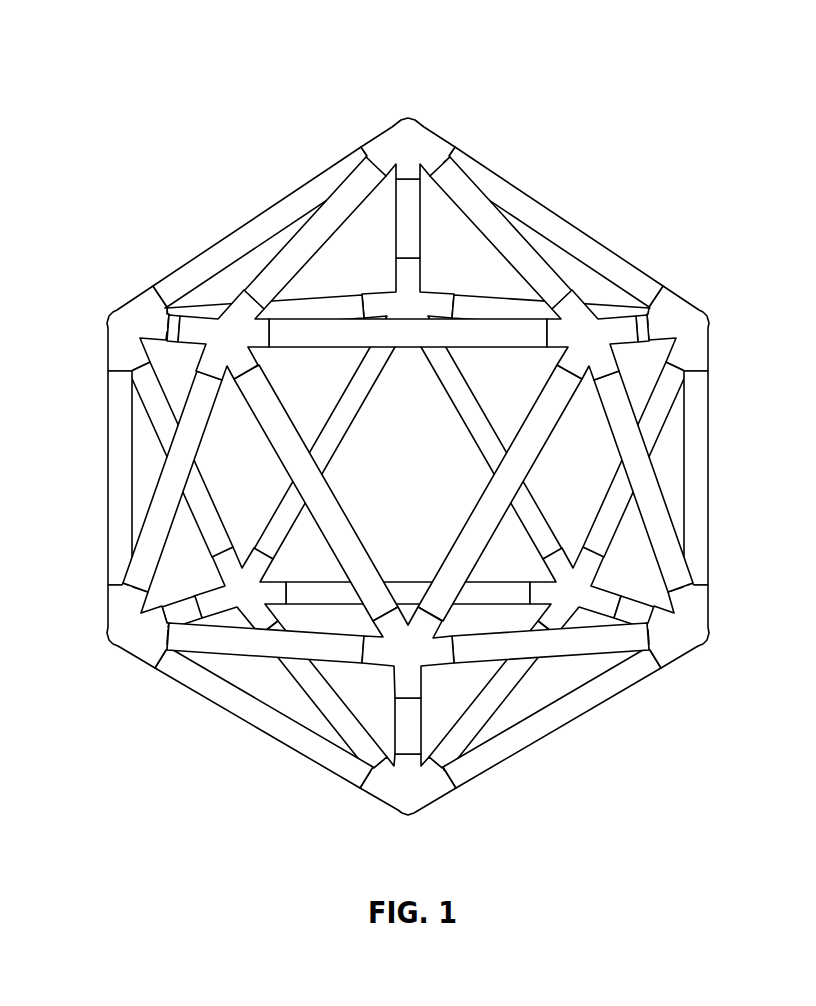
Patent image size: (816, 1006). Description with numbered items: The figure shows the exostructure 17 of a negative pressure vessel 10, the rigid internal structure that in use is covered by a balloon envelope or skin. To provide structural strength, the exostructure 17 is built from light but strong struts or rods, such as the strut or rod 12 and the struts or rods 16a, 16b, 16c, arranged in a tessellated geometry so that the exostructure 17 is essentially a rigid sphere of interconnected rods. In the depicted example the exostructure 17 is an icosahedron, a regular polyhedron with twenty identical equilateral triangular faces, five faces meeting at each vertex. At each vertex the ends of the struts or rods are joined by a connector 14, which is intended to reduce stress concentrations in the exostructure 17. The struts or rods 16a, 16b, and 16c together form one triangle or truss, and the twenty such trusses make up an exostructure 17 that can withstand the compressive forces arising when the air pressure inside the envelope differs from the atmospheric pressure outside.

The negative pressure vessel 10 is at (360, 472).
The strut or rod 12 is at (532, 210).
The connector 14 is at (418, 126).
The exostructure 17 is at (328, 150).
The strut or rod 16a is at (172, 478).
The strut or rod 16b is at (235, 647).
The strut or rod 16c is at (335, 525).